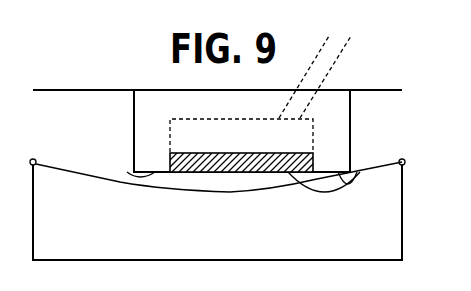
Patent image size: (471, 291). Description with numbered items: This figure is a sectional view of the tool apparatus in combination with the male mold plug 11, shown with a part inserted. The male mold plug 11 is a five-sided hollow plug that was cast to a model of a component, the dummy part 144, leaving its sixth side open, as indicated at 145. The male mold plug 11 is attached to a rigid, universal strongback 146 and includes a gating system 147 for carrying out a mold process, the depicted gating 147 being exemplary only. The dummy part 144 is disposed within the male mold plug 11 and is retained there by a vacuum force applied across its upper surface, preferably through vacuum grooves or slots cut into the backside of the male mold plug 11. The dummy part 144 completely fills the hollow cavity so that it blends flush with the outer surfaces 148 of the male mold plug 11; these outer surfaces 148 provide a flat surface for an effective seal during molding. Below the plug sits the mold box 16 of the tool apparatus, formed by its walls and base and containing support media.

The male mold plug 11 is at (133, 102).
The mold box 16 is at (402, 246).
The dummy part 144 is at (272, 178).
The open sixth side 145 is at (196, 179).
The universal strongback 146 is at (397, 90).
The gating system 147 is at (339, 57).
The outer surfaces 148 is at (127, 173).